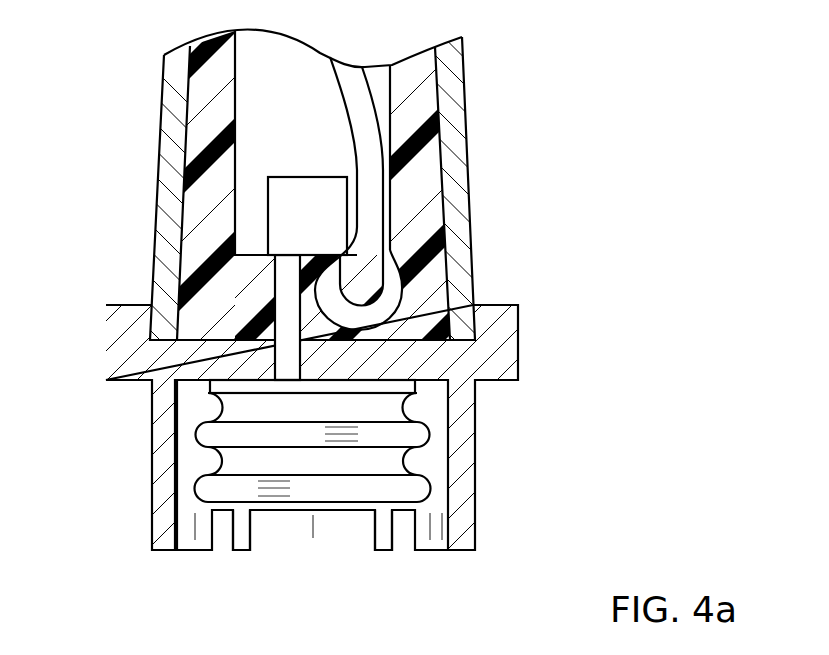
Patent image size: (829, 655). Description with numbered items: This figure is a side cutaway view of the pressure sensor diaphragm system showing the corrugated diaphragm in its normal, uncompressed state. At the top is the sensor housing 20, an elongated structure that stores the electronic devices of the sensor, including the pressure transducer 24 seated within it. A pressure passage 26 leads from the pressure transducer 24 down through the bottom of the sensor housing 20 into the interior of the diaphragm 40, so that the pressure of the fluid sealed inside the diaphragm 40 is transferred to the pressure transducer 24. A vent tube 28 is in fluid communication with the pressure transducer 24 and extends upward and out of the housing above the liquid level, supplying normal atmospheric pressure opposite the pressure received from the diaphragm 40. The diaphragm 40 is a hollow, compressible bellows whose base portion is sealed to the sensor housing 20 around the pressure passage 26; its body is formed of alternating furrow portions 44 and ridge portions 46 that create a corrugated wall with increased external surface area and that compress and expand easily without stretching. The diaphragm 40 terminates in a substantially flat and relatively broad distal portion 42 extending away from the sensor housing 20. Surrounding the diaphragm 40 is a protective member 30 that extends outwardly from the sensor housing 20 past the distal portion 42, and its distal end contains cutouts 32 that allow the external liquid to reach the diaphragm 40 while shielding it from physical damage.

The sensor housing 20 is at (472, 238).
The pressure transducer 24 is at (268, 197).
The pressure passage 26 is at (282, 290).
The vent tube 28 is at (370, 90).
The protective member 30 is at (150, 513).
The cutouts 32 is at (210, 535).
The diaphragm 40 is at (196, 471).
The distal portion 42 is at (337, 500).
The furrow portions 44 is at (405, 458).
The ridge portions 46 is at (430, 435).